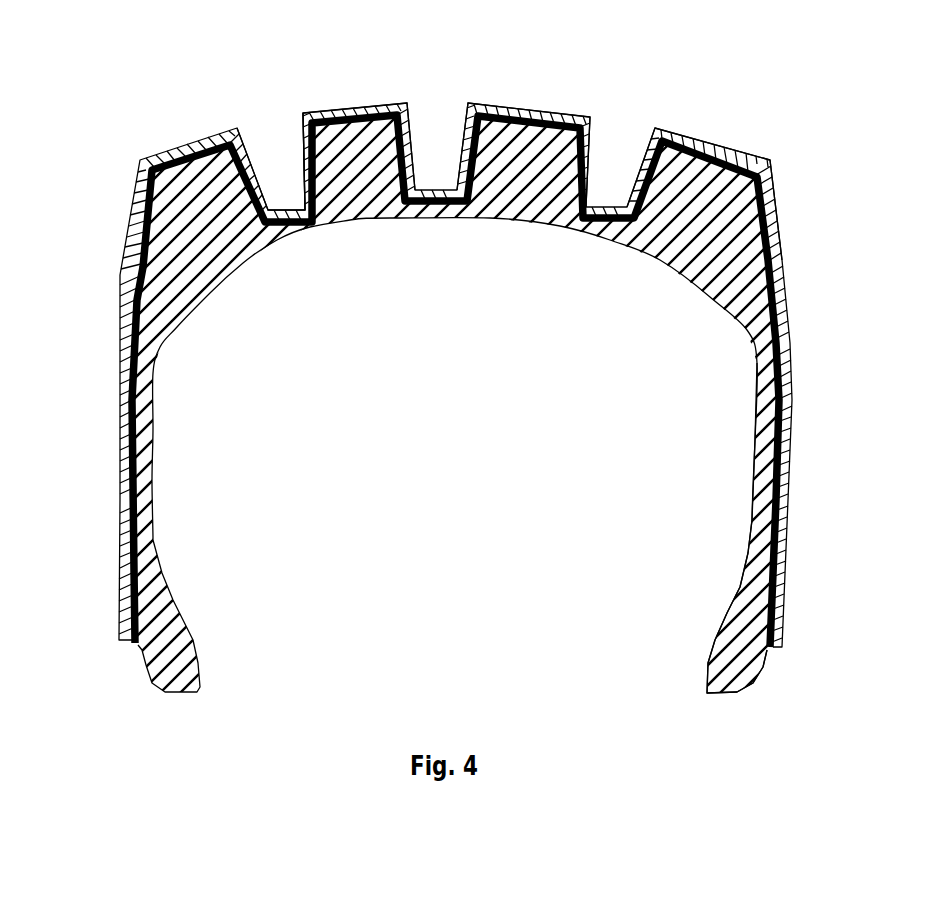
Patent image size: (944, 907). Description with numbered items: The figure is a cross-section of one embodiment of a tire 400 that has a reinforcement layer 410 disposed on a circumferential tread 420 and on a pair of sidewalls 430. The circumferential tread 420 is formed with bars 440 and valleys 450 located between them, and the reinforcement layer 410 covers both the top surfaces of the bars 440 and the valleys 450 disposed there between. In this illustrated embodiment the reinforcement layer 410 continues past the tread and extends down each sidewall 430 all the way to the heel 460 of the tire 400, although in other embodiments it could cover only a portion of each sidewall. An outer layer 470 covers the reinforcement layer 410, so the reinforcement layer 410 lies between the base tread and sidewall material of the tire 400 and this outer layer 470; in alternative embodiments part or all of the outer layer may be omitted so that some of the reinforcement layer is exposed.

The tire 400 is at (140, 77).
The reinforcement layer 410 is at (742, 168).
The circumferential tread 420 is at (420, 77).
The sidewall 430 is at (763, 422).
The bar 440 is at (550, 95).
The valley 450 is at (277, 158).
The heel 460 is at (747, 670).
The outer layer 470 is at (795, 370).